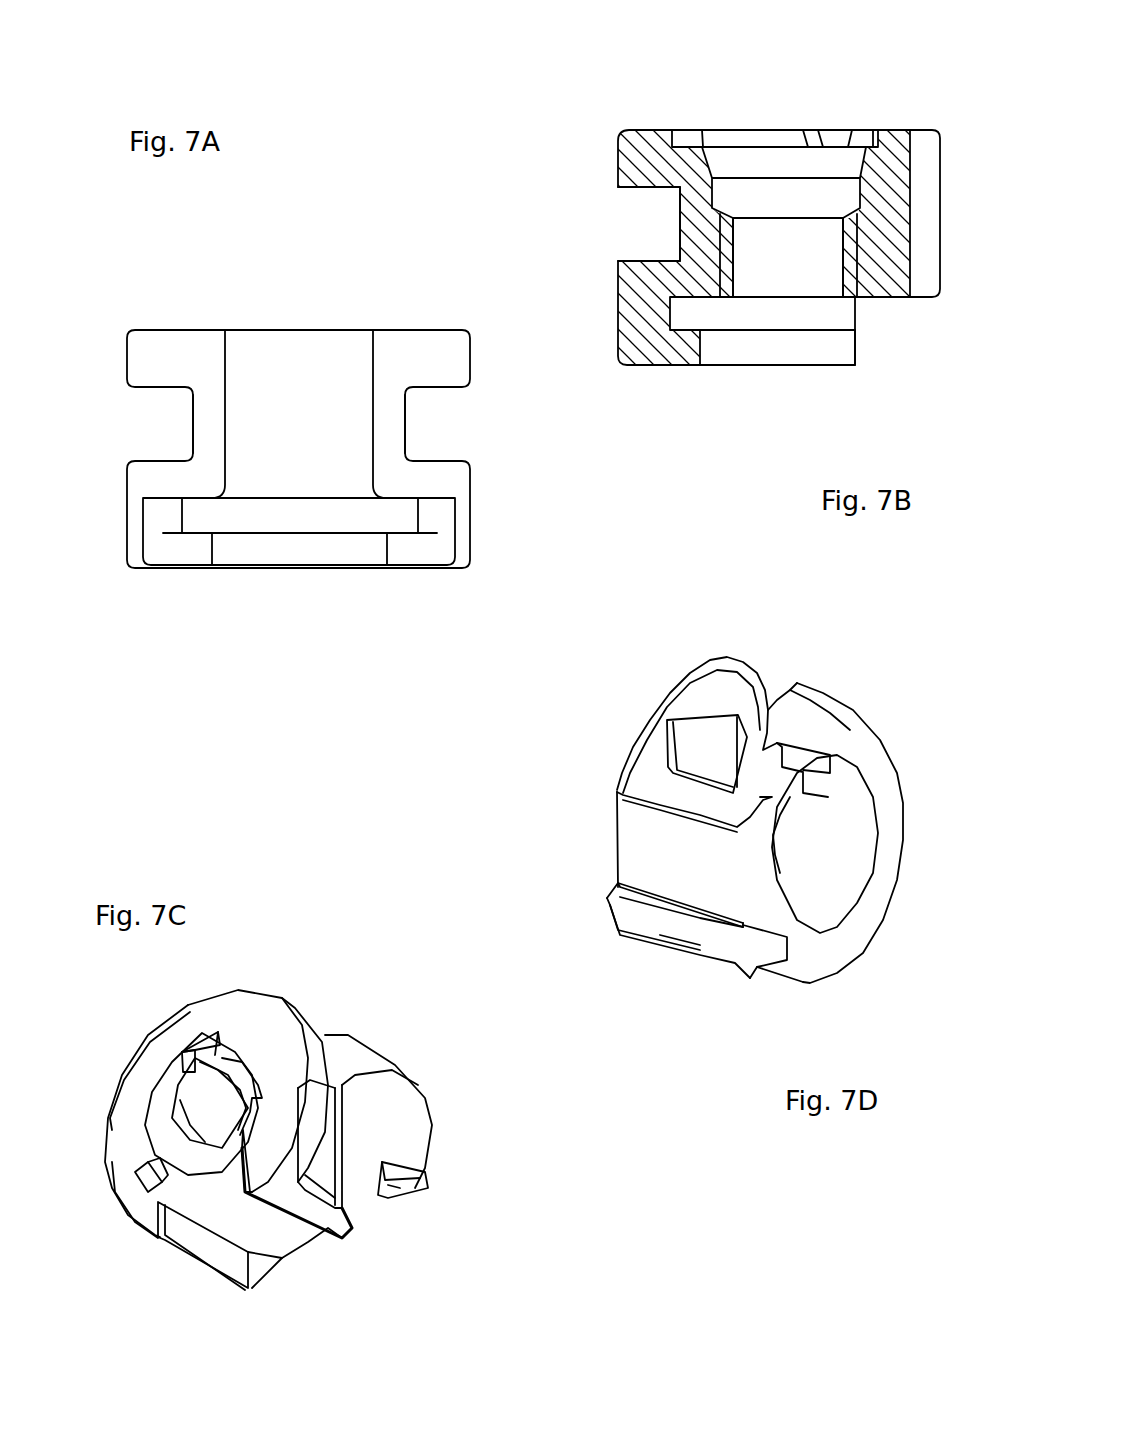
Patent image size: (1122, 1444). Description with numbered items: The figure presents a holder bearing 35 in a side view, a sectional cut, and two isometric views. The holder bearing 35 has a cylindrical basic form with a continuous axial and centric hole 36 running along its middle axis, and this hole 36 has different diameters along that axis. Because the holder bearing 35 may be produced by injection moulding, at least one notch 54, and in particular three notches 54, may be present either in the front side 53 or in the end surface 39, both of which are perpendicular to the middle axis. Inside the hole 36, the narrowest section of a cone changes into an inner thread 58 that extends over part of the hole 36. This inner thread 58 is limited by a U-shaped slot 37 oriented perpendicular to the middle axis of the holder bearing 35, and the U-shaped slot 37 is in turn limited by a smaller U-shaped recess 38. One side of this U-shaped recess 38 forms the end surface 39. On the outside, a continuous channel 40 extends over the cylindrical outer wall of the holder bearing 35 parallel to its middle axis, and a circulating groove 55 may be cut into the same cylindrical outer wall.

In FIG. 7A, the holder bearing 35 is at (368, 308).
In FIG. 7B, the holder bearing 35 is at (645, 106).
In FIG. 7C, the holder bearing 35 is at (380, 1236).
In FIG. 7D, the holder bearing 35 is at (590, 752).
In FIG. 7B, the hole 36 is at (781, 187).
In FIG. 7C, the hole 36 is at (208, 1117).
In FIG. 7D, the hole 36 is at (790, 838).
In FIG. 7A, the U-shaped slot 37 is at (250, 517).
In FIG. 7B, the U-shaped slot 37 is at (766, 318).
In FIG. 7A, the U-shaped recess 38 is at (292, 548).
In FIG. 7B, the U-shaped recess 38 is at (815, 348).
In FIG. 7D, the end surface 39 is at (838, 932).
In FIG. 7A, the channel 40 is at (263, 410).
In FIG. 7C, the channel 40 is at (250, 1233).
In FIG. 7D, the channel 40 is at (694, 868).
In FIG. 7C, the front side 53 is at (255, 1030).
In FIG. 7B, the notch 54 is at (836, 140).
In FIG. 7C, the notch 54 is at (203, 1055).
In FIG. 7A, the circulating groove 55 is at (138, 428).
In FIG. 7B, the circulating groove 55 is at (640, 222).
In FIG. 7C, the circulating groove 55 is at (325, 1173).
In FIG. 7D, the circulating groove 55 is at (725, 742).
In FIG. 7B, the inner thread 58 is at (767, 250).